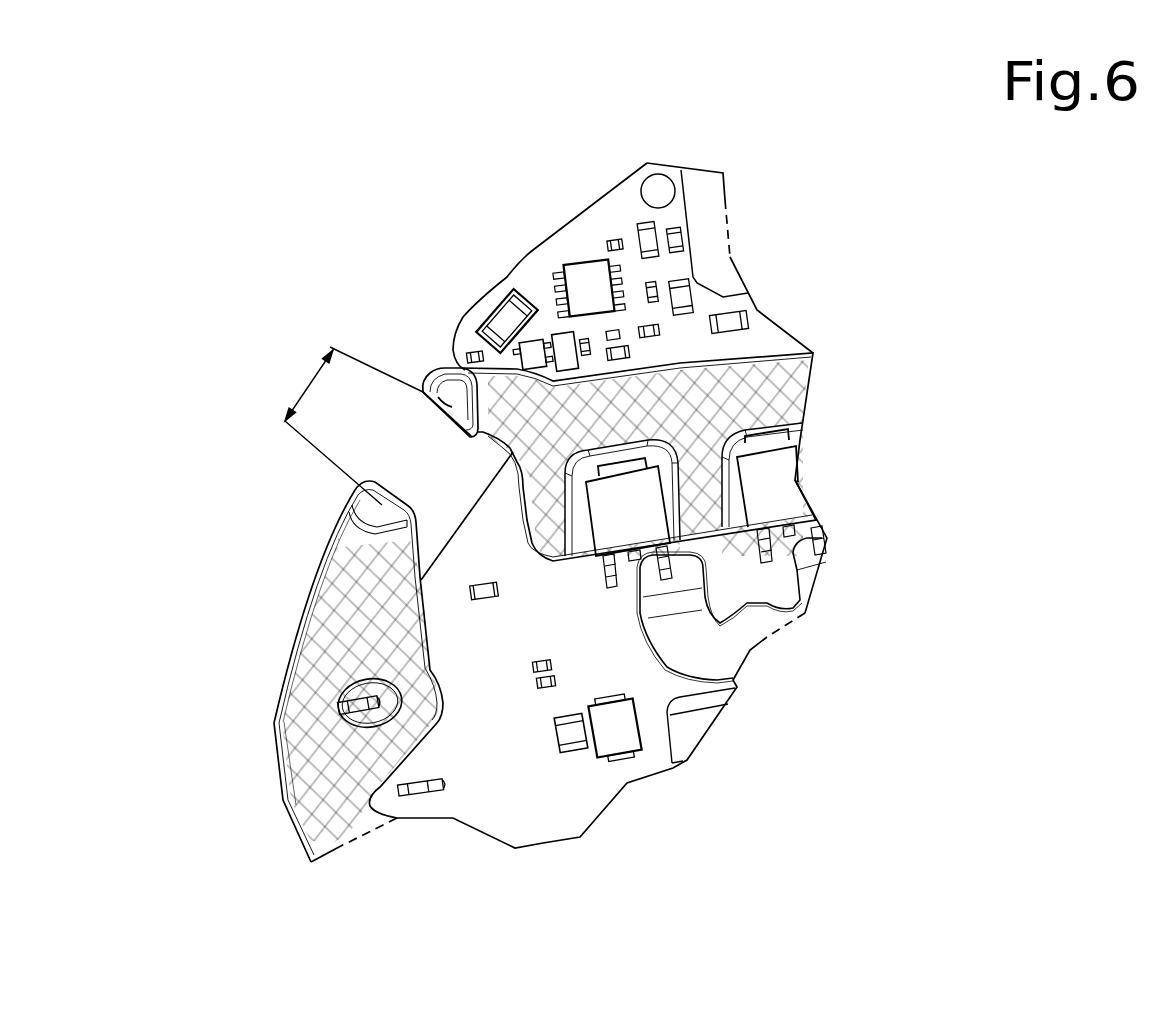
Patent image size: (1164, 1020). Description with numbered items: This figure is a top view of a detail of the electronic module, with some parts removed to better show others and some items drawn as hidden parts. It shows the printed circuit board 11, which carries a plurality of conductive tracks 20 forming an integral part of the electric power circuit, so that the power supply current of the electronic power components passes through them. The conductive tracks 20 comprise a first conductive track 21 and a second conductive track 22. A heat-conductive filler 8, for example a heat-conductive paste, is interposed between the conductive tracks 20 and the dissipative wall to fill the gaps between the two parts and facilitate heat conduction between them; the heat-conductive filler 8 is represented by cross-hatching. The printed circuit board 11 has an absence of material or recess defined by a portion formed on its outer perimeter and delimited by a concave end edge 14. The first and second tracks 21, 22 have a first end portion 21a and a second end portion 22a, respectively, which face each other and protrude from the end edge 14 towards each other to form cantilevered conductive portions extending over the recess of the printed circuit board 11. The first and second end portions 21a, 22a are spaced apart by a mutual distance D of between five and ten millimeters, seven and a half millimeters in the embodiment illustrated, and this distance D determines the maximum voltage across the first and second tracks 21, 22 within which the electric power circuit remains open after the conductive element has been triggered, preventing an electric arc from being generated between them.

The heat-conductive filler 8 is at (332, 642).
The printed circuit board 11 is at (537, 287).
The concave end edge 14 is at (512, 382).
The conductive tracks 20 is at (521, 476).
The first conductive track 21 is at (360, 590).
The first end portion 21a is at (377, 507).
The second conductive track 22 is at (700, 427).
The second end portion 22a is at (450, 405).
The mutual distance D is at (308, 383).